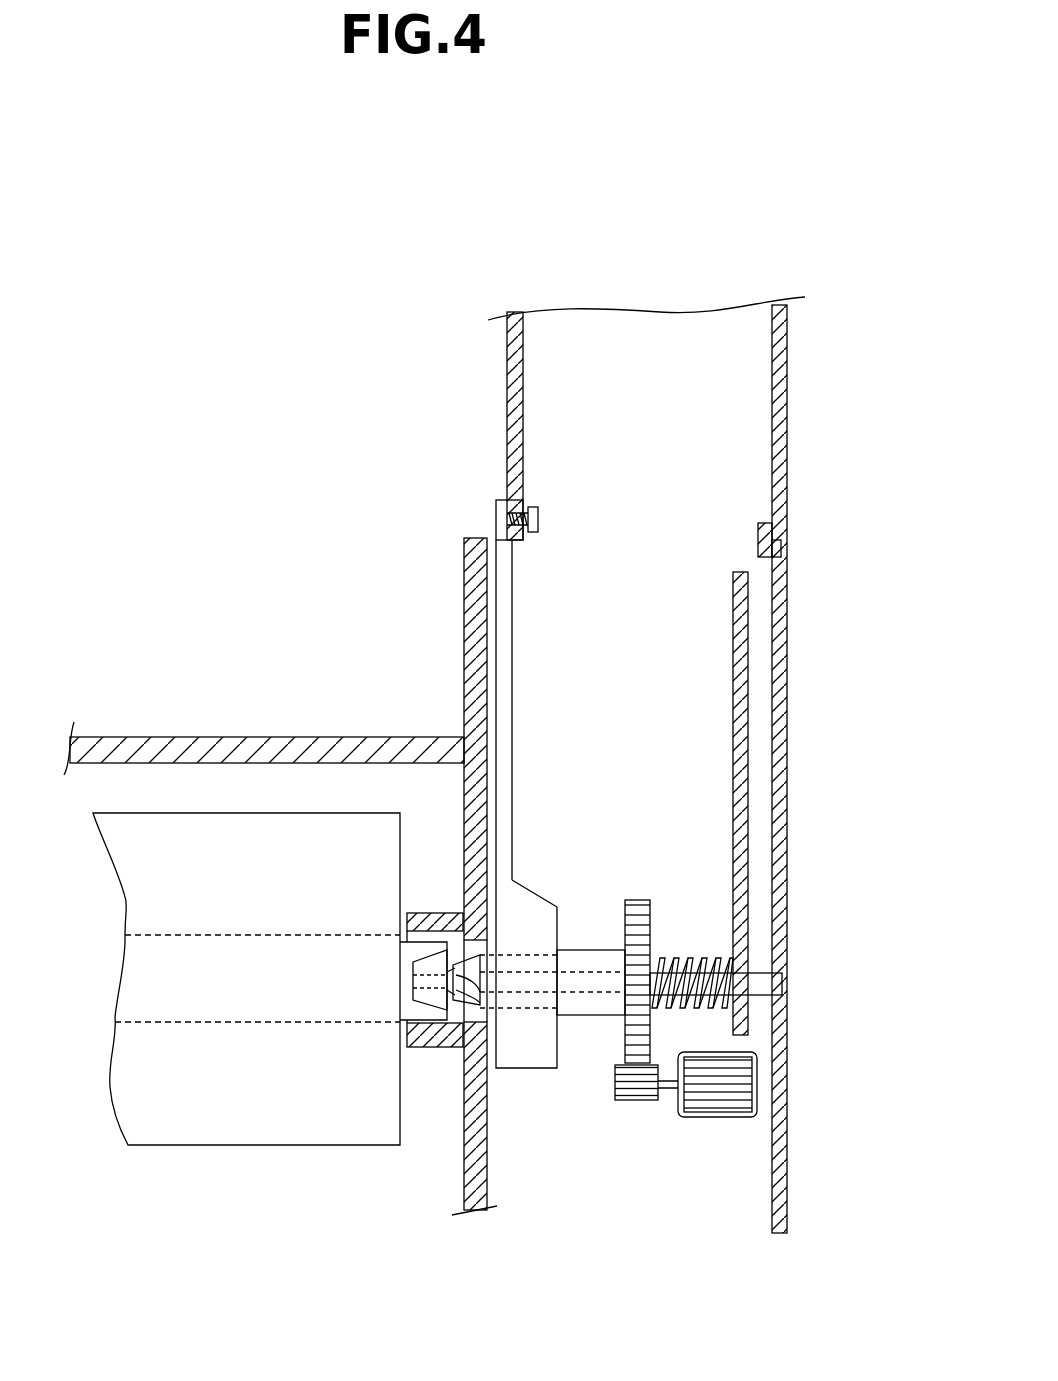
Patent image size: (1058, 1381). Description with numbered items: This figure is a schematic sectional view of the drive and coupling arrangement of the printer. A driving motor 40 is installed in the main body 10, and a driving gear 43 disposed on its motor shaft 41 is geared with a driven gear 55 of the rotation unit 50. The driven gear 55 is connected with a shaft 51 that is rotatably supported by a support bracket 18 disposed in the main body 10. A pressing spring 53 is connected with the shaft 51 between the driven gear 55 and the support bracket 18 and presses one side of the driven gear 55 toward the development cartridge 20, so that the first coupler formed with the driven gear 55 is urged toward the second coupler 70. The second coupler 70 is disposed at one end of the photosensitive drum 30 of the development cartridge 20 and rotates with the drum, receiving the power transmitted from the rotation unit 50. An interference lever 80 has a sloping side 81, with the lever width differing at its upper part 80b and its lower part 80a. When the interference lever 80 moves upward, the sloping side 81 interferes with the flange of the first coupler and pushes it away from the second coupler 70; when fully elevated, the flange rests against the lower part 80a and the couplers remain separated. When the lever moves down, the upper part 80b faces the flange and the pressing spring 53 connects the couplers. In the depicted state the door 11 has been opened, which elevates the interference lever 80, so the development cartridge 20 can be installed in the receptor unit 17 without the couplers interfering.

The main body 10 is at (802, 558).
The door 11 is at (779, 352).
The receptor unit 17 is at (433, 1110).
The support bracket 18 is at (752, 686).
The development cartridge 20 is at (246, 1061).
The photosensitive drum 30 is at (213, 1023).
The driving motor 40 is at (727, 1097).
The motor shaft 41 is at (658, 1090).
The driving gear 43 is at (615, 1097).
The rotation unit 50 is at (683, 1040).
The shaft 51 is at (786, 972).
The pressing spring 53 is at (762, 985).
The driven gear 55 is at (640, 943).
The second coupler 70 is at (395, 1022).
The interference lever 80 is at (488, 852).
The lower part 80a is at (545, 1000).
The upper part 80b is at (507, 638).
The sloping side 81 is at (535, 862).